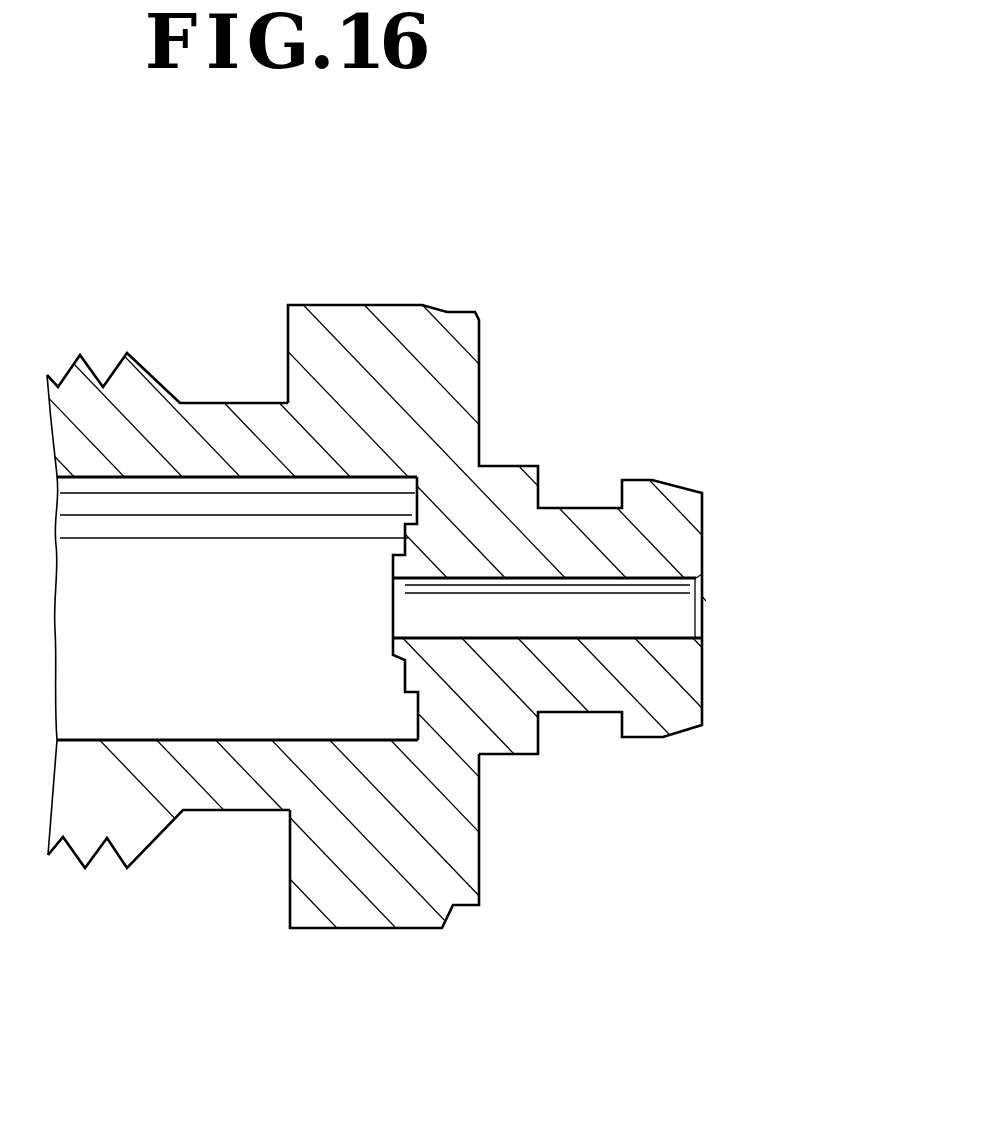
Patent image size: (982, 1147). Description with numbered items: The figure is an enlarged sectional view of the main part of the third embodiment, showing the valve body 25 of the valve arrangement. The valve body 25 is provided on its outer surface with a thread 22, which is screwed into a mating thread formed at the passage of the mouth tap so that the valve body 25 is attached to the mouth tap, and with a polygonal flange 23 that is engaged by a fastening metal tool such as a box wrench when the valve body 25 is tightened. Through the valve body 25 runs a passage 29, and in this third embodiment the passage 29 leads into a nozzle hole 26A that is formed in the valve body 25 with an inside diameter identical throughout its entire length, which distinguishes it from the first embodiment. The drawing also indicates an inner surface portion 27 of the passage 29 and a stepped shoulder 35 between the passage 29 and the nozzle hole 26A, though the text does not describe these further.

The thread 22 is at (90, 360).
The polygonal flange 23 is at (388, 928).
The valve body 25 is at (483, 313).
The nozzle hole 26A is at (652, 581).
The internal thread 27 is at (227, 476).
The passage 29 is at (135, 650).
The stepped shoulder 35 is at (393, 645).